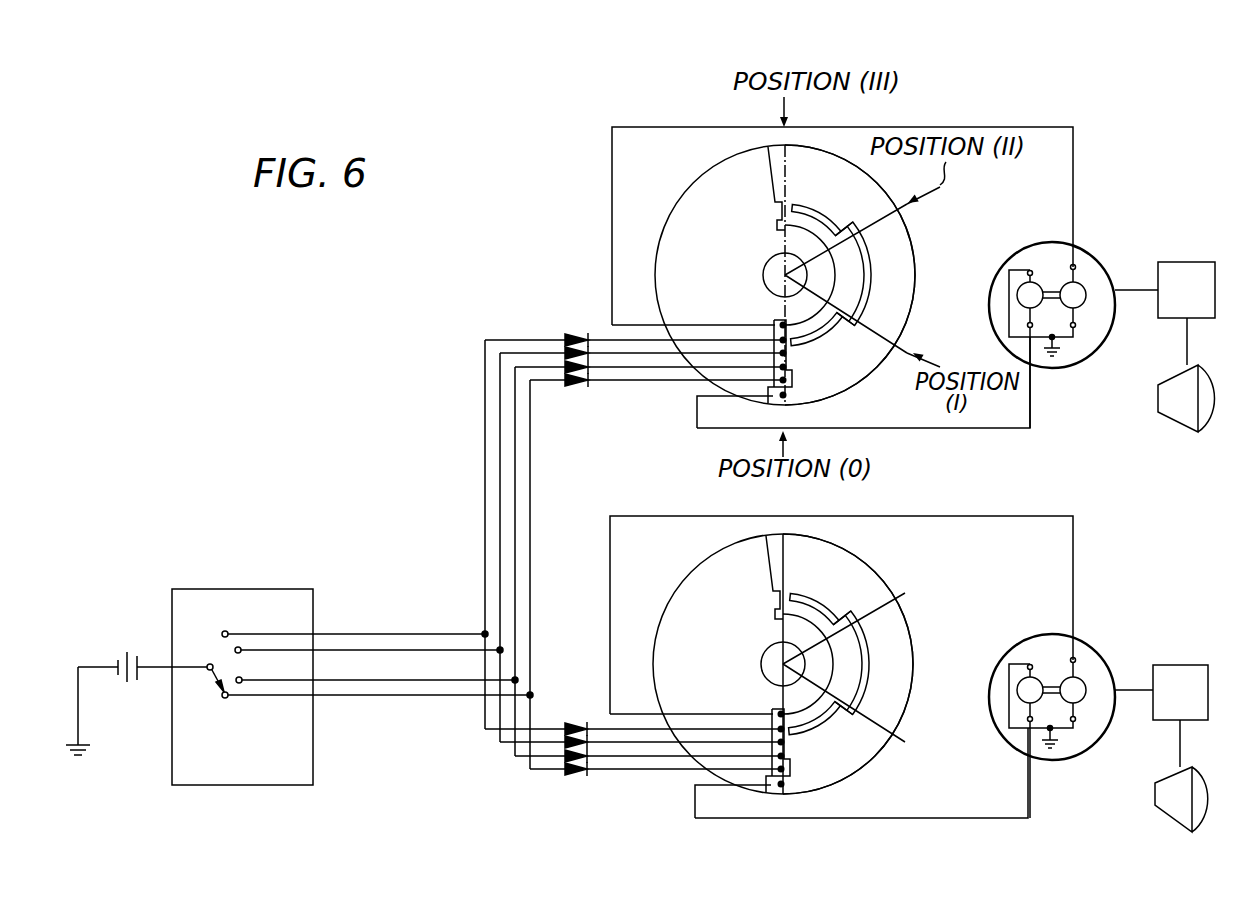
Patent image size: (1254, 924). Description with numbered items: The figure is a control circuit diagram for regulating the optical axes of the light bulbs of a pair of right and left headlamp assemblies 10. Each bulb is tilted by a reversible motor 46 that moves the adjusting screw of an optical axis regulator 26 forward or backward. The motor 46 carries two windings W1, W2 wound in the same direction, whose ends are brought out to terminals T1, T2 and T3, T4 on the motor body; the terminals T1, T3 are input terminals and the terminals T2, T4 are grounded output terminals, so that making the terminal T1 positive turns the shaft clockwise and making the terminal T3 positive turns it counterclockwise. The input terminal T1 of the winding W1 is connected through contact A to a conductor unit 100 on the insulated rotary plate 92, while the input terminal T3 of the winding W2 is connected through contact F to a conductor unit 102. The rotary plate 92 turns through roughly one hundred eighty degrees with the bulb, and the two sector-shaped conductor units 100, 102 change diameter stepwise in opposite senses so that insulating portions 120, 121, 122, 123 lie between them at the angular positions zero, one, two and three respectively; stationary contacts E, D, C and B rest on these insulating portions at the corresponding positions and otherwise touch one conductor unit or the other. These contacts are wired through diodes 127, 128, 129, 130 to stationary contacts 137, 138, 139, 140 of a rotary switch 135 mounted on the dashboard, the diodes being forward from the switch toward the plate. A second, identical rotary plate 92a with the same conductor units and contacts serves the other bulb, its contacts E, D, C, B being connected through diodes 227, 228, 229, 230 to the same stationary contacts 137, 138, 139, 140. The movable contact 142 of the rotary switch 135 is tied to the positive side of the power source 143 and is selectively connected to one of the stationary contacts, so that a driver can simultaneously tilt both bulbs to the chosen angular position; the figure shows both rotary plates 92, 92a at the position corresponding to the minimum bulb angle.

The rotary plate 92 is at (699, 192).
The rotary plate 92a is at (690, 590).
The conductor unit 100 is at (777, 232).
The conductor unit 102 is at (903, 243).
The insulating portion 120 is at (790, 400).
The insulating portion 121 is at (873, 313).
The insulating portion 122 is at (858, 222).
The insulating portion 123 is at (780, 217).
The diode 127 is at (580, 388).
The diode 128 is at (563, 372).
The diode 129 is at (563, 348).
The diode 130 is at (571, 335).
The rotary switch 135 is at (313, 600).
The stationary contact 137 is at (228, 698).
The stationary contact 138 is at (242, 680).
The stationary contact 139 is at (240, 647).
The stationary contact 140 is at (227, 631).
The movable contact 142 is at (208, 664).
The power source 143 is at (136, 691).
The diode 227 is at (582, 776).
The diode 228 is at (562, 760).
The diode 229 is at (562, 746).
The diode 230 is at (571, 724).
The motor 46 is at (1018, 297).
The optical axis regulator 26 is at (1215, 280).
The headlamp assembly 10 is at (1214, 384).
The input terminal T1 is at (1094, 454).
The output terminal T2 is at (1089, 533).
The input terminal T3 is at (1048, 522).
The output terminal T4 is at (1042, 462).
The winding W1 is at (1085, 303).
The winding W2 is at (1020, 305).